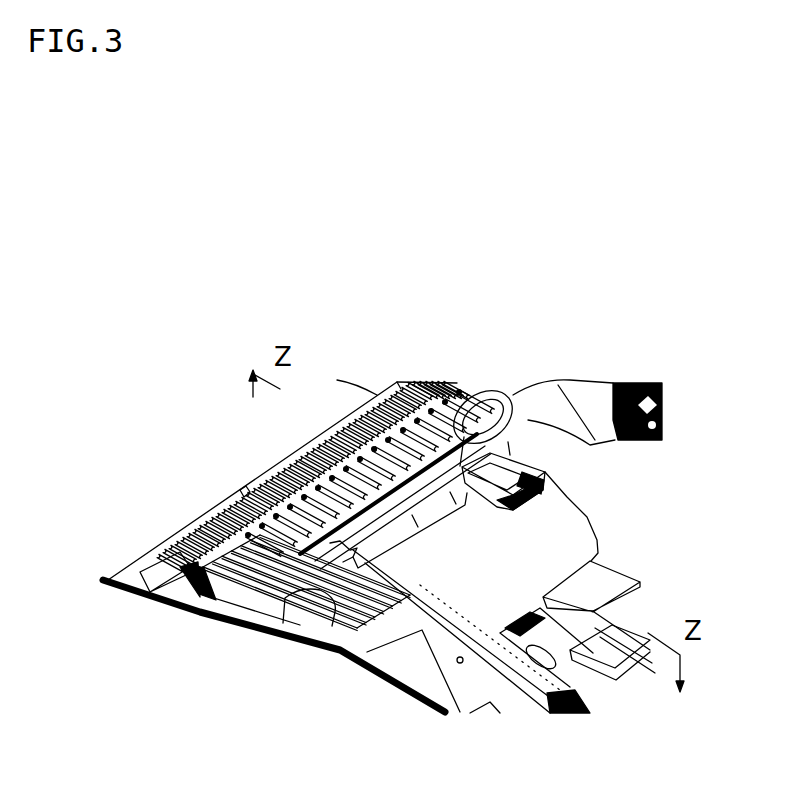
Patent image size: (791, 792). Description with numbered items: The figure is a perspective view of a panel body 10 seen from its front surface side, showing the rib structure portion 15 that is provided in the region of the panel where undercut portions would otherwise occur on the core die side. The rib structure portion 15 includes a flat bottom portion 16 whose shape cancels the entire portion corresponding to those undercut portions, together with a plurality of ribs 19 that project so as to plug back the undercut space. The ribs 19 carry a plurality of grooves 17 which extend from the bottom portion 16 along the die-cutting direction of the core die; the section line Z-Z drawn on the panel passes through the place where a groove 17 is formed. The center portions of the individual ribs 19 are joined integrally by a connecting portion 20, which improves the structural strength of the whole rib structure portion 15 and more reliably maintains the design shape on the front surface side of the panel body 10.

The panel body 10 is at (627, 537).
The rib structure portion 15 is at (250, 454).
The bottom portion 16 is at (227, 625).
The groove 17 is at (297, 640).
The rib 19 is at (540, 447).
The connecting portion 20 is at (240, 502).